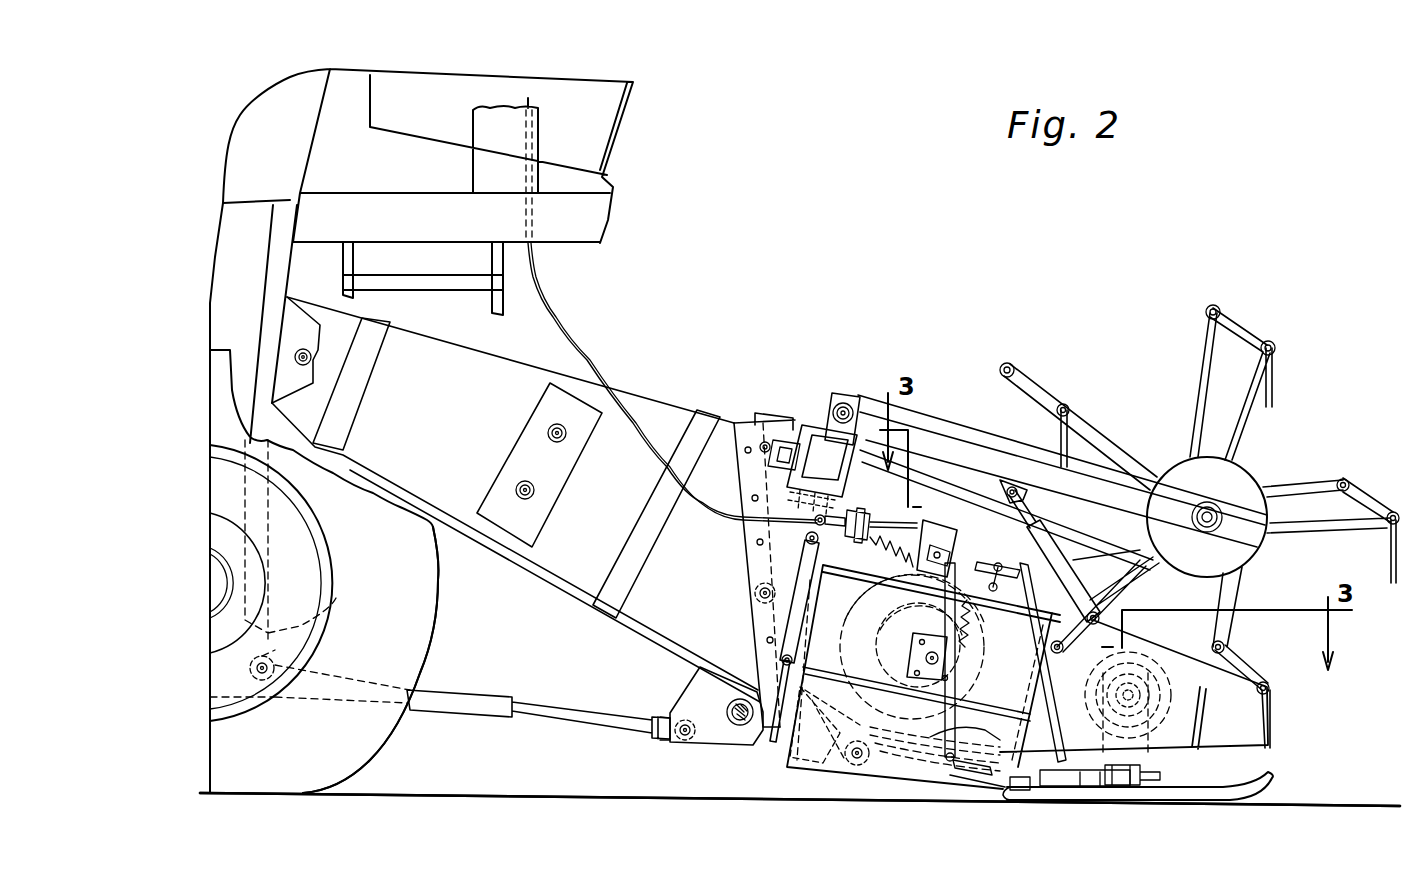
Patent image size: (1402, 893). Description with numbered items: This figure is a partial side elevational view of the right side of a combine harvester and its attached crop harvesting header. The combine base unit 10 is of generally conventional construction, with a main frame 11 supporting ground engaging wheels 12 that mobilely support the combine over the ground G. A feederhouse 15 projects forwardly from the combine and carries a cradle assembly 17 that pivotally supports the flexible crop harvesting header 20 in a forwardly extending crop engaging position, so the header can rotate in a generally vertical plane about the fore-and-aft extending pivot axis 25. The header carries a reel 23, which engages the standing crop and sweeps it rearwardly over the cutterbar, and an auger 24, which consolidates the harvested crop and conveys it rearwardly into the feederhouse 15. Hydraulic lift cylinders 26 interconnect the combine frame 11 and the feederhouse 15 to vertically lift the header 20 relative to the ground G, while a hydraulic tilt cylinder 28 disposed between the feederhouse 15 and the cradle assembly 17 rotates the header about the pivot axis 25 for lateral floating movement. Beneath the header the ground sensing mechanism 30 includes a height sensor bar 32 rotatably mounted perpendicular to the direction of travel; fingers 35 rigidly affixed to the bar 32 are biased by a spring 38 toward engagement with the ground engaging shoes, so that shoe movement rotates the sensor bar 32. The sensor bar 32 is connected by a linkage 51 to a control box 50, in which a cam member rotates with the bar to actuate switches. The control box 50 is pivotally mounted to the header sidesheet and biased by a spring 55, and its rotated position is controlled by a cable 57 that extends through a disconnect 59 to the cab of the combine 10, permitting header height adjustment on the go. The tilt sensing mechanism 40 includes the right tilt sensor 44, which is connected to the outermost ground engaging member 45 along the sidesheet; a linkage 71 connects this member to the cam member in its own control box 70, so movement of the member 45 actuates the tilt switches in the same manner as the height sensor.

The combine base unit 10 is at (637, 162).
The main frame 11 is at (338, 617).
The ground engaging wheels 12 is at (433, 623).
The feederhouse 15 is at (495, 358).
The cradle assembly 17 is at (762, 418).
The crop harvesting header 20 is at (1060, 350).
The reel 23 is at (1275, 283).
The auger 24 is at (783, 757).
The pivot axis 25 is at (777, 493).
The hydraulic lift cylinders 26 is at (462, 688).
The hydraulic tilt cylinder 28 is at (793, 613).
The ground sensing mechanism 30 is at (945, 806).
The height sensor bar 32 is at (943, 740).
The fingers 35 is at (1033, 803).
The spring 38 is at (893, 627).
The tilt sensing mechanism 40 is at (1147, 813).
The right tilt sensor 44 is at (1120, 665).
The outermost ground engaging member 45 is at (1092, 803).
The control box 50 is at (933, 513).
The linkage 51 is at (940, 603).
The spring 55 is at (803, 580).
The cable 57 is at (583, 353).
The disconnect 59 is at (807, 527).
The control box 70 is at (973, 620).
The linkage 71 is at (1040, 690).
The ground G is at (525, 793).